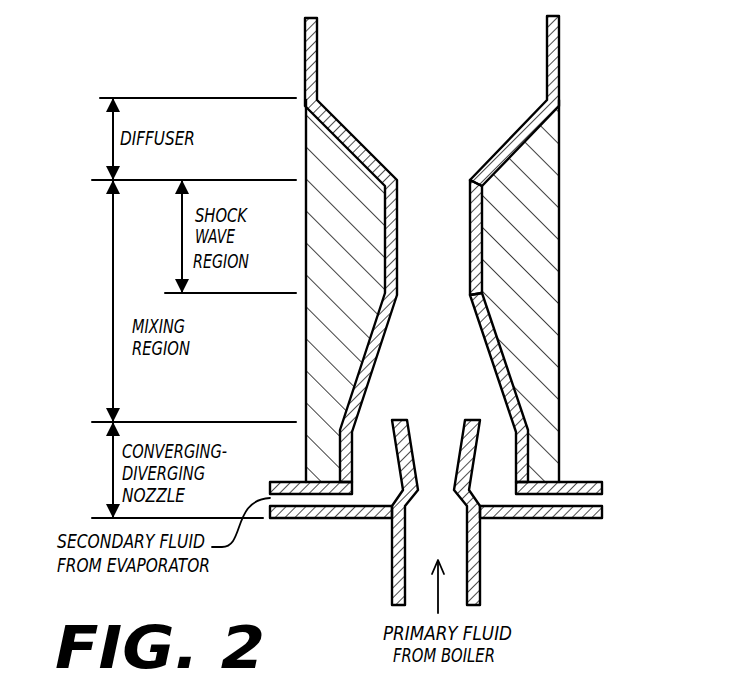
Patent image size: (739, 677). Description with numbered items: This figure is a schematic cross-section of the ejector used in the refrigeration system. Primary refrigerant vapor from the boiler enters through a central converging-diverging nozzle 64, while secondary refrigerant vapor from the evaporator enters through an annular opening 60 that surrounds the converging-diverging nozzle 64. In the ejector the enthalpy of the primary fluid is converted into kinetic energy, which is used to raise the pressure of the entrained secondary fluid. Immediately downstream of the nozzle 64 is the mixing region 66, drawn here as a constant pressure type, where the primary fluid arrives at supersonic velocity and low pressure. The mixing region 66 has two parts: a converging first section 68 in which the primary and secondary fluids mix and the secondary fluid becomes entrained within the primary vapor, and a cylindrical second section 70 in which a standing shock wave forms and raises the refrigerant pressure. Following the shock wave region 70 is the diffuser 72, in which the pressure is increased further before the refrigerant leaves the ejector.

The annular opening 60 is at (342, 500).
The converging-diverging nozzle 64 is at (440, 453).
The mixing region 66 is at (112, 296).
The first section 68 is at (457, 362).
The second section 70 is at (433, 253).
The diffuser 72 is at (443, 118).